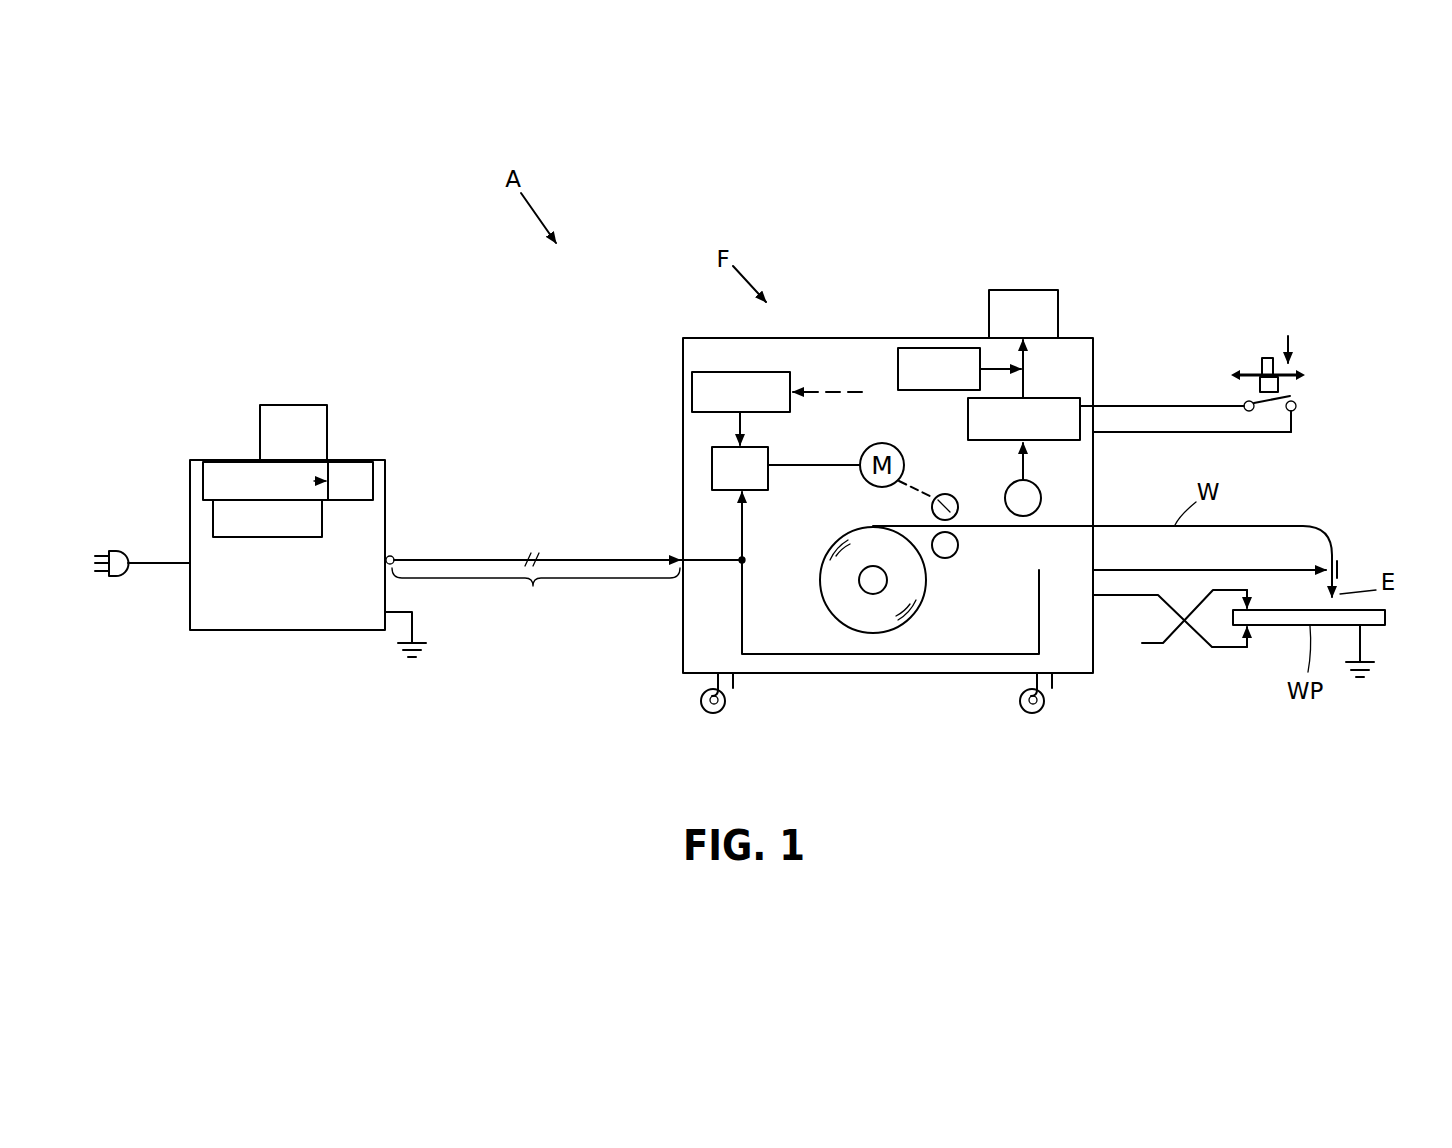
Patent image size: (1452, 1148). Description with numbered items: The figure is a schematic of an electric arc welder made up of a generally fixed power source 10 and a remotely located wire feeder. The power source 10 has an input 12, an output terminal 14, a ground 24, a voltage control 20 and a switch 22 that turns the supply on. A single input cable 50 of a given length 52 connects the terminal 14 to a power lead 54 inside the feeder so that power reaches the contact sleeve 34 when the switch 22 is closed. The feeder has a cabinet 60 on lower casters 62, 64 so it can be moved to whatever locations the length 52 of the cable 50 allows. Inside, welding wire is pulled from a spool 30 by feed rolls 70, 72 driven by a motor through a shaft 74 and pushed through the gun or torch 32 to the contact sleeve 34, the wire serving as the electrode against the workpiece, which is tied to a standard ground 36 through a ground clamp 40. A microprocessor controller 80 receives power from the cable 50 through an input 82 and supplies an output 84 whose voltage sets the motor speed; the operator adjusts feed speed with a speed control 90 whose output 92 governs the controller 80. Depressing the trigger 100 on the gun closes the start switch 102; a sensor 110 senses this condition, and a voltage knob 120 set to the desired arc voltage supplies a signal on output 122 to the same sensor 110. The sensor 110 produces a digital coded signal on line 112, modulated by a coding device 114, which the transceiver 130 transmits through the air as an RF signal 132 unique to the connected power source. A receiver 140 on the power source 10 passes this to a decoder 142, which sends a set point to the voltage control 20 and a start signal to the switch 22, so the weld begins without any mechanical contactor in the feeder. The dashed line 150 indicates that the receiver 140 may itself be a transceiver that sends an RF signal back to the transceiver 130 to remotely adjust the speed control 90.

The power source 10 is at (308, 633).
The input 12 is at (118, 577).
The output terminal 14 is at (396, 553).
The voltage control 20 is at (374, 483).
The switch 22 is at (213, 513).
The ground 24 is at (414, 641).
The spool 30 is at (877, 621).
The gun or torch 32 is at (1333, 542).
The contact sleeve 34 is at (1342, 568).
The ground 36 is at (1365, 645).
The ground clamp 40 is at (1233, 648).
The input cable 50 is at (578, 559).
The length 52 is at (536, 593).
The power lead 54 is at (848, 655).
The cabinet 60 is at (941, 678).
The caster 62 is at (1045, 715).
The caster 64 is at (727, 712).
The feed roll 70 is at (953, 546).
The feed roll 72 is at (951, 494).
The shaft 74 is at (918, 492).
The microprocessor controller 80 is at (712, 466).
The input 82 is at (740, 514).
The output 84 is at (812, 468).
The speed control 90 is at (692, 385).
The output 92 is at (738, 427).
The trigger 100 is at (1265, 355).
The start switch 102 is at (1268, 411).
The sensor 110 is at (1055, 398).
The output line 112 is at (1023, 356).
The coding device 114 is at (925, 391).
The voltage knob 120 is at (1041, 493).
The output 122 is at (1026, 463).
The transceiver 130 is at (1058, 292).
The signal 132 is at (338, 422).
The receiver 140 is at (297, 405).
The decoder 142 is at (228, 462).
The dashed line 150 is at (827, 392).